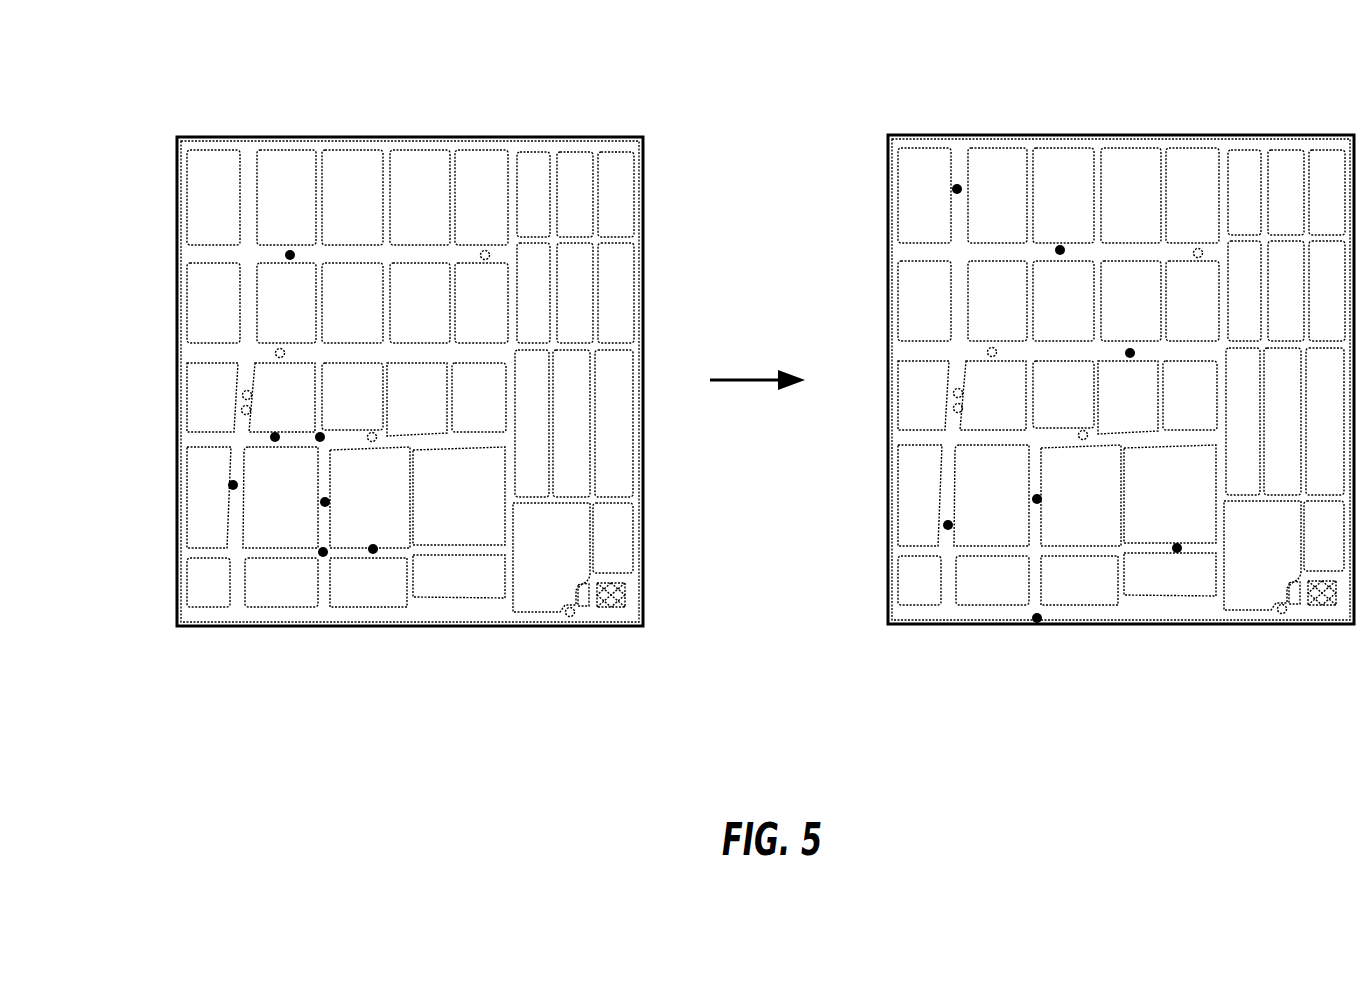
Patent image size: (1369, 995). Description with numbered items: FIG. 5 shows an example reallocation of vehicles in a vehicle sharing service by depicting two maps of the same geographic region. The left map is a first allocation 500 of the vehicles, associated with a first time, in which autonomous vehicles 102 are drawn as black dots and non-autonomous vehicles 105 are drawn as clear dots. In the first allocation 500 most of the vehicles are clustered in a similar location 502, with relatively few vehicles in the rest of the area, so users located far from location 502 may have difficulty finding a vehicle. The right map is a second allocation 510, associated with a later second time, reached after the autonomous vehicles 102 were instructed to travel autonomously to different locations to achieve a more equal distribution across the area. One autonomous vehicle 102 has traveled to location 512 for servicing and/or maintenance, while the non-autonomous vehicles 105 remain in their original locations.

The first allocation 500 is at (232, 80).
The second allocation 510 is at (994, 72).
The autonomous vehicles 102 is at (230, 487).
The non-autonomous vehicles 105 is at (481, 260).
The similar location 502 is at (282, 533).
The location for servicing and/or maintenance 512 is at (1025, 632).